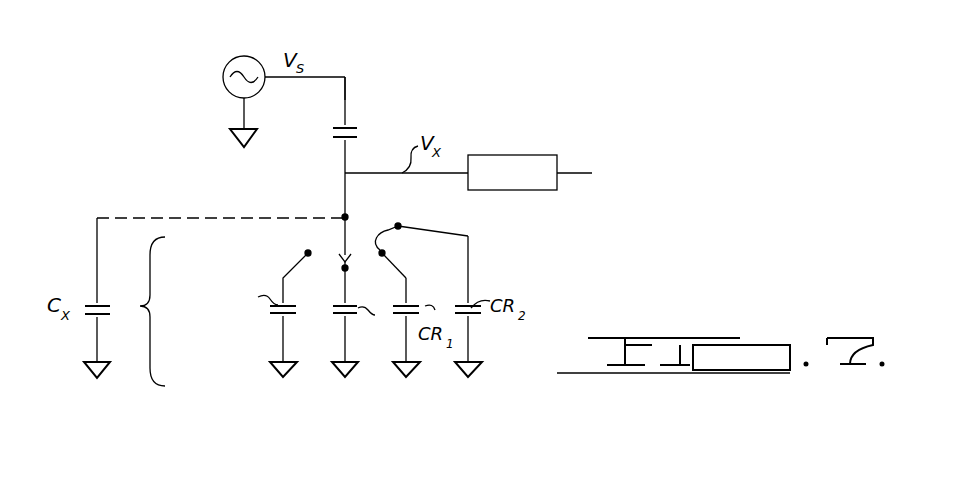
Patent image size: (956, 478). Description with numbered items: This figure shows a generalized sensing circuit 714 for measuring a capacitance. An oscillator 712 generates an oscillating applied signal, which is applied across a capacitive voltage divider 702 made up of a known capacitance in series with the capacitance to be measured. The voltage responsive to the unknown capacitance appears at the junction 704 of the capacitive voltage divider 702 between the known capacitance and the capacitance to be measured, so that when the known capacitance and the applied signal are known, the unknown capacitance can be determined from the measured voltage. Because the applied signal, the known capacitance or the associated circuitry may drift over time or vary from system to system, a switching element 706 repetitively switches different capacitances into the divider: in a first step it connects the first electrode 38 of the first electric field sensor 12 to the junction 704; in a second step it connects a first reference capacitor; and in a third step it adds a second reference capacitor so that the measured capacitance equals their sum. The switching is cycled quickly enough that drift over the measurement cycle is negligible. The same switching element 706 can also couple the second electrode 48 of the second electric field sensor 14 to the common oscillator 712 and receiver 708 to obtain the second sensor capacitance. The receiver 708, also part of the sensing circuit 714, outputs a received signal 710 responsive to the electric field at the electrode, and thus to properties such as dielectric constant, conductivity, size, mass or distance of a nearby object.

The oscillator 712 is at (222, 72).
The sensing circuit 714 is at (361, 57).
The capacitive voltage divider 702 is at (374, 97).
The junction 704 is at (343, 215).
The switching element 706 is at (374, 219).
The receiver 708 is at (546, 155).
The received signal 710 is at (579, 173).
The first electric field sensor 12 is at (241, 314).
The first electrode 38 is at (268, 325).
The second electric field sensor 14 is at (345, 320).
The second electrode 48 is at (330, 320).